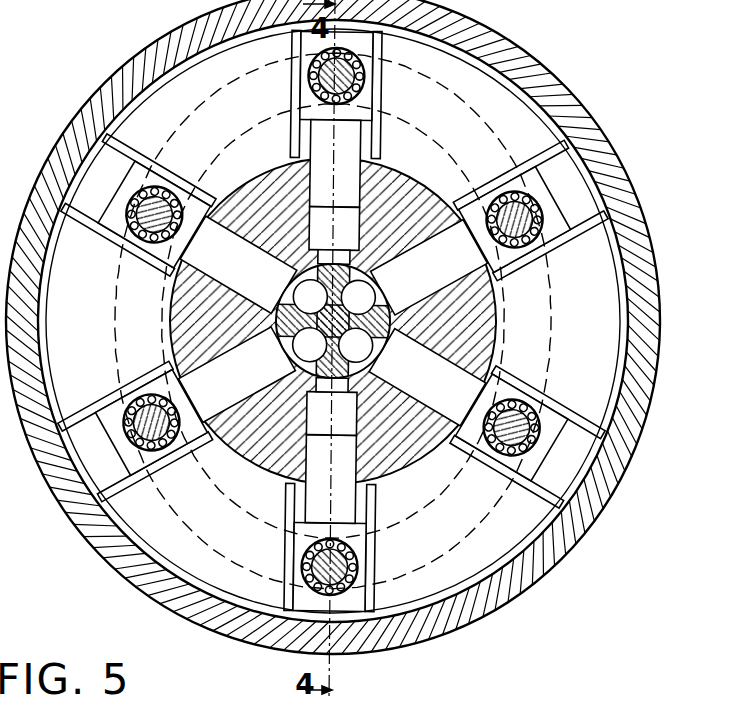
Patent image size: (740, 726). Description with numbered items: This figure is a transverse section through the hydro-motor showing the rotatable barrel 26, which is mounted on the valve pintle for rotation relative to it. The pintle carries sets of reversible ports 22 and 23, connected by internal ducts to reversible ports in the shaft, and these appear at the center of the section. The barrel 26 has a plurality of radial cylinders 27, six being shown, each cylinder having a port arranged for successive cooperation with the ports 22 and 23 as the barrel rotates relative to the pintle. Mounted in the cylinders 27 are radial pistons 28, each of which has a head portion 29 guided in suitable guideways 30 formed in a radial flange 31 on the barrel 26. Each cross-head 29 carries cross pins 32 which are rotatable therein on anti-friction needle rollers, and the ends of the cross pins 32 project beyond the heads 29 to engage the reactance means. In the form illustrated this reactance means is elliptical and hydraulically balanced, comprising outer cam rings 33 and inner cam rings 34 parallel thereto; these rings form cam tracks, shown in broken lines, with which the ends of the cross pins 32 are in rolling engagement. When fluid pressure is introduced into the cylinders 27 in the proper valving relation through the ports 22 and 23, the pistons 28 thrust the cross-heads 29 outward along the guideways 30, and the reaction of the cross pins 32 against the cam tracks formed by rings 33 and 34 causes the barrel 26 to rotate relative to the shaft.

The reversible ports 22 is at (332, 320).
The reversible ports 23 is at (333, 320).
The rotatable barrel 26 is at (421, 186).
The radial cylinders 27 is at (332, 321).
The radial pistons 28 is at (359, 489).
The head portion (cross-head) 29 is at (372, 68).
The guideways 30 is at (292, 88).
The radial flange 31 is at (358, 321).
The cross pins 32 is at (205, 463).
The outer cam rings 33 is at (550, 292).
The inner cam rings 34 is at (517, 337).